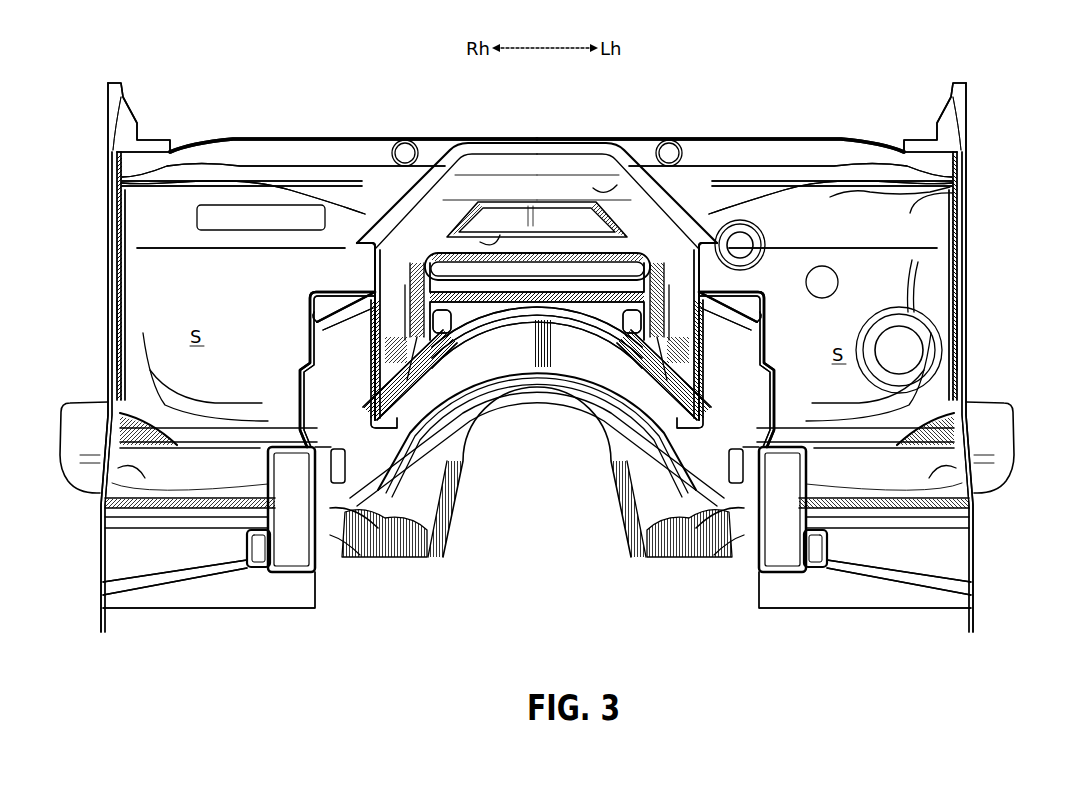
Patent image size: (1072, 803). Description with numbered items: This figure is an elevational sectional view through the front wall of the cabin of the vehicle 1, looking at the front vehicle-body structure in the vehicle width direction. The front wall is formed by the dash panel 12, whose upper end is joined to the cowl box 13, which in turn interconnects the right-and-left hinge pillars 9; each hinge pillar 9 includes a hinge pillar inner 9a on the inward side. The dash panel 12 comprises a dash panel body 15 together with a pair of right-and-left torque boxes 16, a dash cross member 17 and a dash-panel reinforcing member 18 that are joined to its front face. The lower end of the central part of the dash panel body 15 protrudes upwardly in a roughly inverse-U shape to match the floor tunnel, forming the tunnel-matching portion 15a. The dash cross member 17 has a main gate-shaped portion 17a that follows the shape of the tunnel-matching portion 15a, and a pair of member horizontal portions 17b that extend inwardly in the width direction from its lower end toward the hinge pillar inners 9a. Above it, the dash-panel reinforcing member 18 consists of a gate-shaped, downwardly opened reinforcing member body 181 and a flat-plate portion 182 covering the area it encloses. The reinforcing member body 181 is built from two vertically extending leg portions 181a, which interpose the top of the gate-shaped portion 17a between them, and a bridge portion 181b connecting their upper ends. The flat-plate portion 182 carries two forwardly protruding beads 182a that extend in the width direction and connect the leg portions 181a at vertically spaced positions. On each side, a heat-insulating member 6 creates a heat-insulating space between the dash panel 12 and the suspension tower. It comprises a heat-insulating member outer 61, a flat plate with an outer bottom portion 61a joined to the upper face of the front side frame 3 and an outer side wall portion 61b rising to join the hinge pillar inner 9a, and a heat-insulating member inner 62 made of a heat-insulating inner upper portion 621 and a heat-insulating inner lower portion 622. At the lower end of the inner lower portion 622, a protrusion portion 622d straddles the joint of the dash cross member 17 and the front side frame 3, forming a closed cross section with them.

The vehicle 1 is at (429, 70).
The front side frame 3 is at (295, 585).
The heat-insulating member 6 is at (537, 276).
The hinge pillar 9 is at (537, 117).
The hinge pillar inner 9a is at (105, 85).
The dash panel 12 is at (537, 357).
The cowl box 13 is at (852, 132).
The dash panel body 15 is at (950, 190).
The tunnel-matching portion 15a is at (622, 522).
The torque box 16 is at (128, 560).
The dash cross member 17 is at (412, 472).
The member gate-shaped portion 17a is at (550, 357).
The member horizontal portion 17b is at (100, 470).
The dash-panel reinforcing member 18 is at (505, 132).
The reinforcing member body 181 is at (537, 341).
The leg portion 181a is at (300, 368).
The bridge portion 181b is at (598, 188).
The flat-plate portion 182 is at (560, 215).
The bead 182a is at (480, 242).
The heat-insulating member outer 61 is at (107, 280).
The outer bottom portion 61a is at (147, 410).
The outer side wall portion 61b is at (120, 348).
The heat-insulating member inner 62 is at (365, 90).
The heat-insulating inner upper portion 621 is at (365, 263).
The heat-insulating inner lower portion 622 is at (300, 347).
The protrusion portion 622d is at (380, 522).